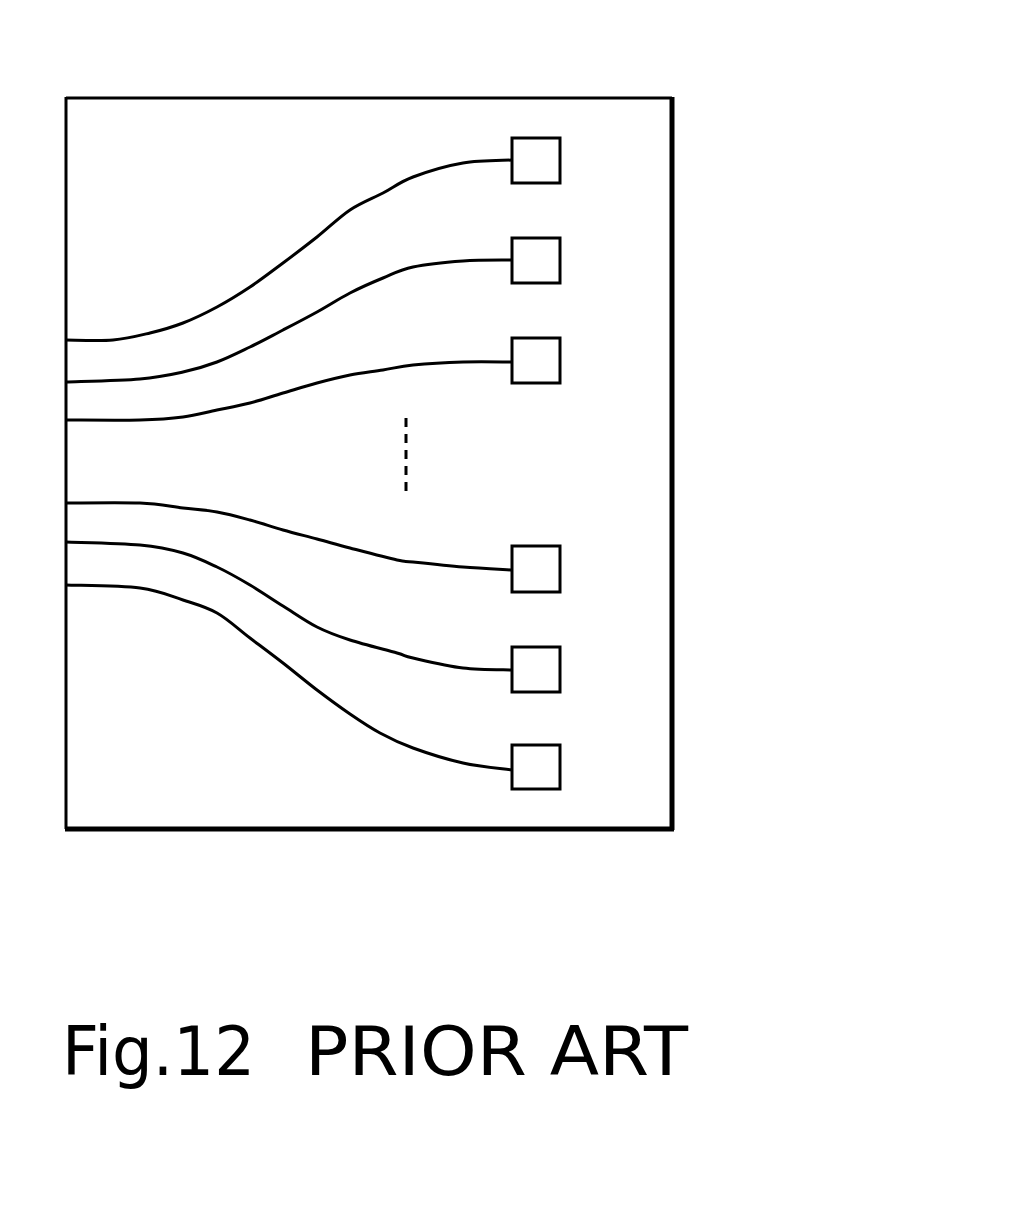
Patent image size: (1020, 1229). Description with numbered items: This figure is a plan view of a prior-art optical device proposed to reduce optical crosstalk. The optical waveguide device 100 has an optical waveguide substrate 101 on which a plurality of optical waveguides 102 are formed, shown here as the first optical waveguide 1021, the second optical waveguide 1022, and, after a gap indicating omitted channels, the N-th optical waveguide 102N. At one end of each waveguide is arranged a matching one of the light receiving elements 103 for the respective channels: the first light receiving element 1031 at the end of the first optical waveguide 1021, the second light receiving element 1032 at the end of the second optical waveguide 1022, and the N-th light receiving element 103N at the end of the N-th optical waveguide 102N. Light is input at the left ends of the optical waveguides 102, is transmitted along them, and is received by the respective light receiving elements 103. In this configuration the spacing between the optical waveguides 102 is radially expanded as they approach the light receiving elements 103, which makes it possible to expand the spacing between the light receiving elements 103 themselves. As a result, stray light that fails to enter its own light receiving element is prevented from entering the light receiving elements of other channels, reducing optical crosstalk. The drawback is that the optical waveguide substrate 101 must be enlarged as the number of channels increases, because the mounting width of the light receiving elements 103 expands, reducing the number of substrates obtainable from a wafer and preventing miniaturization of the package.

The optical waveguide device 100 is at (708, 182).
The optical waveguide substrate 101 is at (480, 98).
The optical waveguides 102 is at (289, 465).
The first optical waveguide 1021 is at (112, 339).
The second optical waveguide 1022 is at (323, 307).
The N-th optical waveguide 102N is at (108, 590).
The light receiving elements 103 is at (590, 454).
The first light receiving element 1031 is at (560, 158).
The second light receiving element 1032 is at (560, 258).
The N-th light receiving element 103N is at (560, 762).